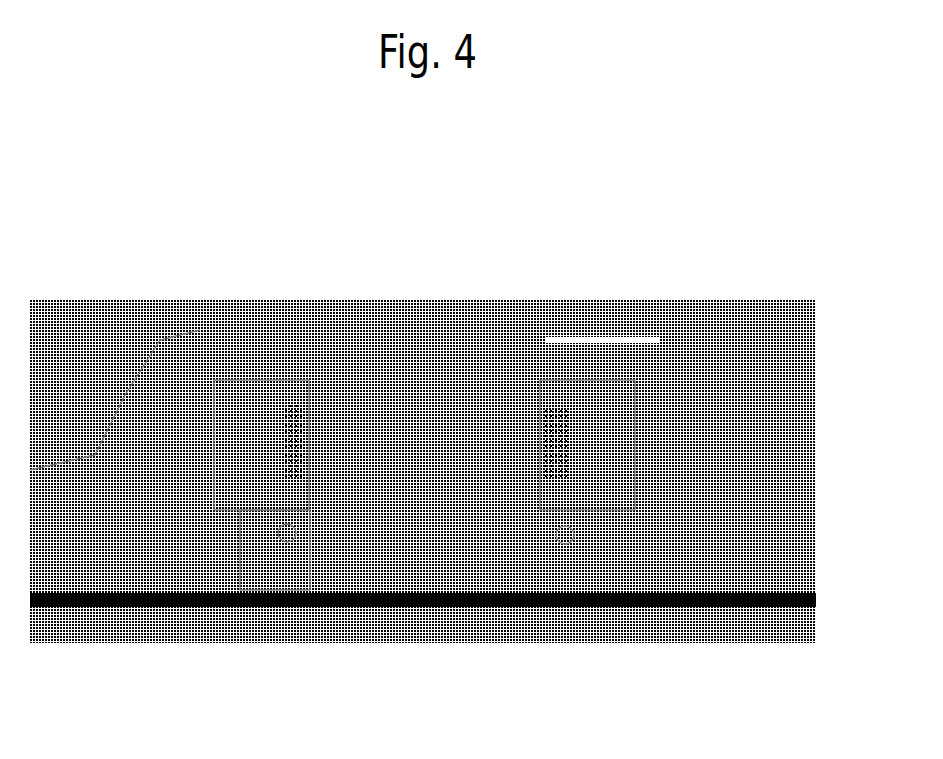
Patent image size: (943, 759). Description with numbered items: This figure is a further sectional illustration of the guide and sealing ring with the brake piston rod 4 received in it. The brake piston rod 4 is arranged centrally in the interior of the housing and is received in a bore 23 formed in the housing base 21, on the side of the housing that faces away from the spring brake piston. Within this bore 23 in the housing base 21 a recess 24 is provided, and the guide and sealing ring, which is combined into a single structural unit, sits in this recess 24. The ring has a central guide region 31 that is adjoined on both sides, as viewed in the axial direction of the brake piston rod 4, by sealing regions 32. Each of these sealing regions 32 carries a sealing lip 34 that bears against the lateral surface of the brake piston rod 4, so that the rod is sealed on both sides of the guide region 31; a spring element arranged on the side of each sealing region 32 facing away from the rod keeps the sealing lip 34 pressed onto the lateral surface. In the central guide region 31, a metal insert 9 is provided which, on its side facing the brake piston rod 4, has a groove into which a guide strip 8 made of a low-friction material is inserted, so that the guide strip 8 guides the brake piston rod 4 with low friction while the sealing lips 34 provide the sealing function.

The brake piston rod 4 is at (478, 347).
The housing base 21 is at (75, 555).
The recess 24 is at (246, 560).
The bore 23 is at (280, 575).
The sealing region 32 is at (312, 631).
The guide region 31 is at (343, 558).
The sealing lip 34 is at (545, 540).
The guide strip 8 is at (555, 470).
The metal insert 9 is at (612, 478).